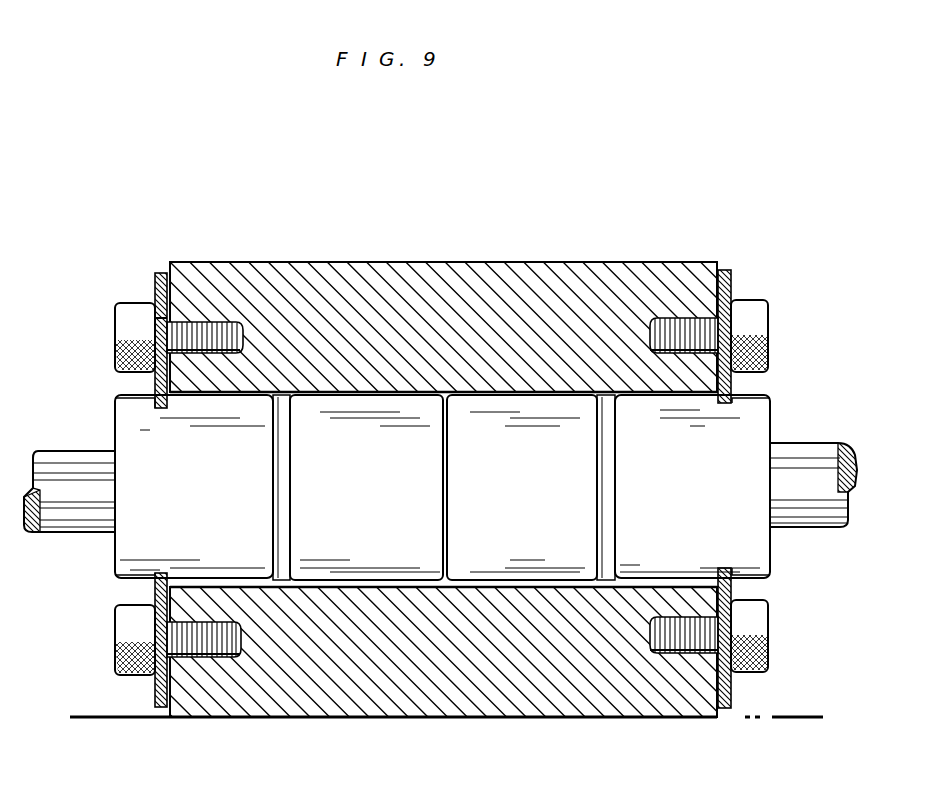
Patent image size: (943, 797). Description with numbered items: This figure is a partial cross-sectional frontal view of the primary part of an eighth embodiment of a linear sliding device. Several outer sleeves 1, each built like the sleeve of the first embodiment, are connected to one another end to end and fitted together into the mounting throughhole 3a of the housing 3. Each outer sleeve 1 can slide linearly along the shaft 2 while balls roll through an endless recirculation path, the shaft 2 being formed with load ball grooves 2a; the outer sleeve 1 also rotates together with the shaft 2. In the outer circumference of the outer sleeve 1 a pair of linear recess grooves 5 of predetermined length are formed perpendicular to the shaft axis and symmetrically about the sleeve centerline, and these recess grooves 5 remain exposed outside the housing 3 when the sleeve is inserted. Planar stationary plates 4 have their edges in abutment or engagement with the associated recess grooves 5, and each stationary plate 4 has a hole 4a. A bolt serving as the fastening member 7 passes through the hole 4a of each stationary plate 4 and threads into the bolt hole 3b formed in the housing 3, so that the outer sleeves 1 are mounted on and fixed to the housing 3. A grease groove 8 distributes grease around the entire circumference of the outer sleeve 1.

The outer sleeve 1 is at (118, 574).
The shaft 2 is at (85, 535).
The load ball grooves 2a is at (805, 458).
The housing 3 is at (592, 262).
The mounting throughhole 3a is at (330, 395).
The bolt hole 3b is at (240, 335).
The stationary plate 4 is at (160, 272).
The hole 4a is at (155, 320).
The recess groove 5 is at (152, 400).
The fastening member 7 is at (770, 327).
The grease groove 8 is at (274, 494).